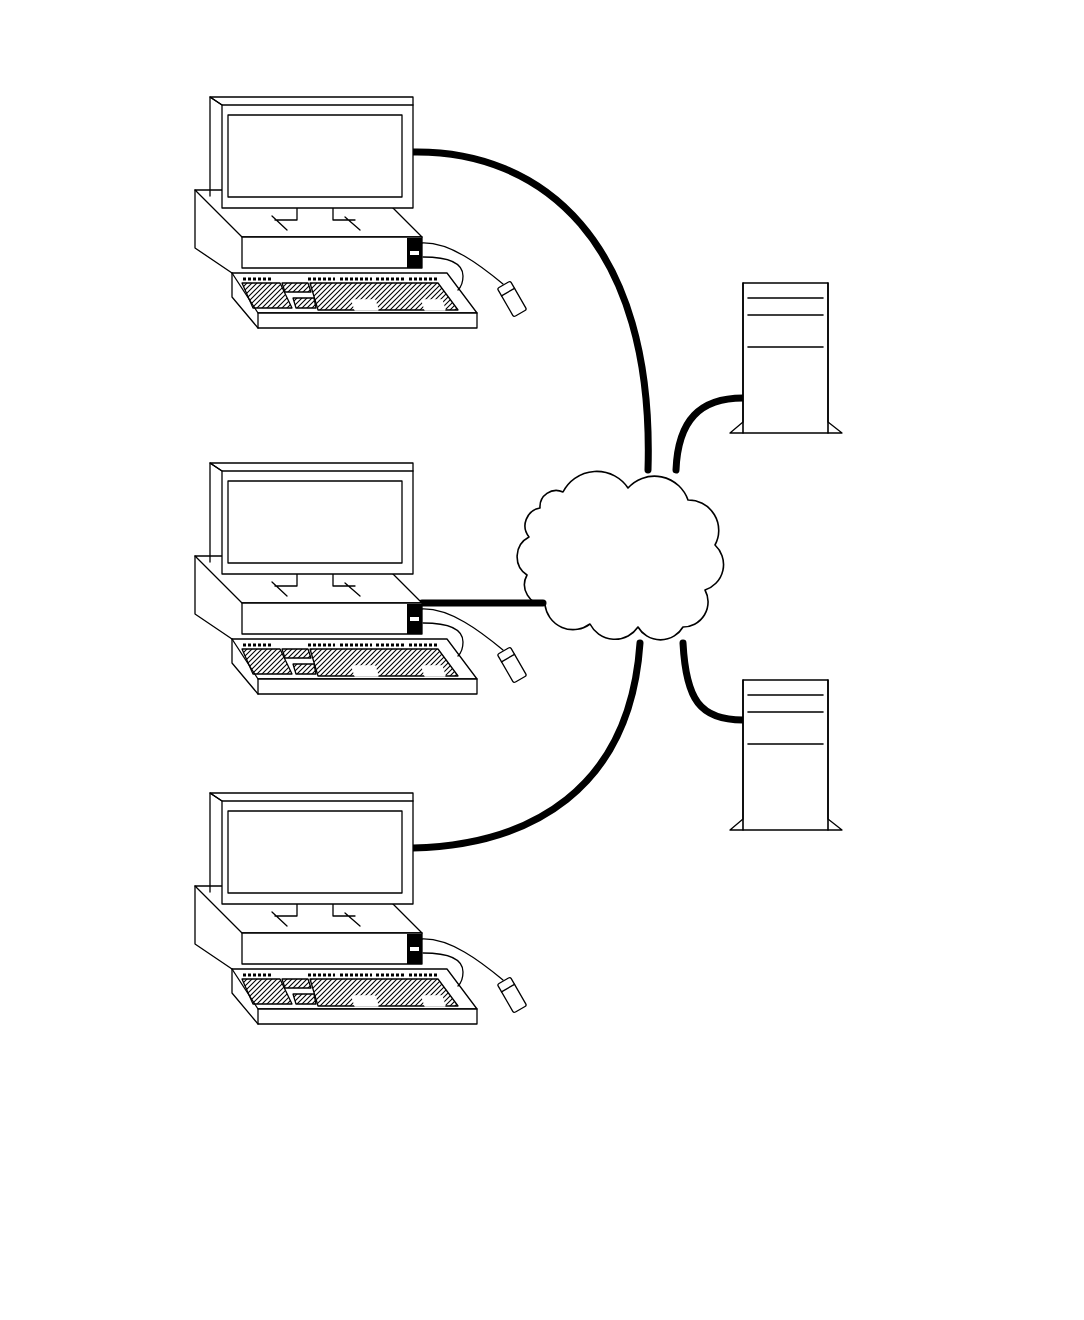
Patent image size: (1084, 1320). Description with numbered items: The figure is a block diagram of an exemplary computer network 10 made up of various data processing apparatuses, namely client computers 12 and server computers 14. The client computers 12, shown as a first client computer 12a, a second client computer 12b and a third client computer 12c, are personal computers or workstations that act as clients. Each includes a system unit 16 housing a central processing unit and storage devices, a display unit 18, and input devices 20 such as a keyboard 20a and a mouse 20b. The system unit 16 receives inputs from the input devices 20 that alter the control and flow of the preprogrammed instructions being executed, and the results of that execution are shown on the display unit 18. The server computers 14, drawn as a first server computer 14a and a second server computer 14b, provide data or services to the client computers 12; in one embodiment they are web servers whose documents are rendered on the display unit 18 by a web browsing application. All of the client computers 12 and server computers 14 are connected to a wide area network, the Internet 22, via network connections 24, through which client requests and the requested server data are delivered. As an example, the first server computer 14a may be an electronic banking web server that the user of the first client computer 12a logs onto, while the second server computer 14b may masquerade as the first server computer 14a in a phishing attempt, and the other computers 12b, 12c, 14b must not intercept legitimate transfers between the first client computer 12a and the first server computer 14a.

The computer network 10 is at (578, 75).
The client computers 12 is at (102, 210).
The first client computer 12a is at (181, 210).
The second client computer 12b is at (172, 572).
The third client computer 12c is at (172, 905).
The server computers 14 is at (833, 353).
The first server computer 14a is at (828, 295).
The second server computer 14b is at (828, 805).
The system unit 16 is at (203, 258).
The display unit 18 is at (368, 140).
The input devices 20 is at (419, 319).
The keyboard 20a is at (283, 328).
The mouse 20b is at (518, 290).
The Internet 22 is at (606, 599).
The network connections 24 is at (588, 200).